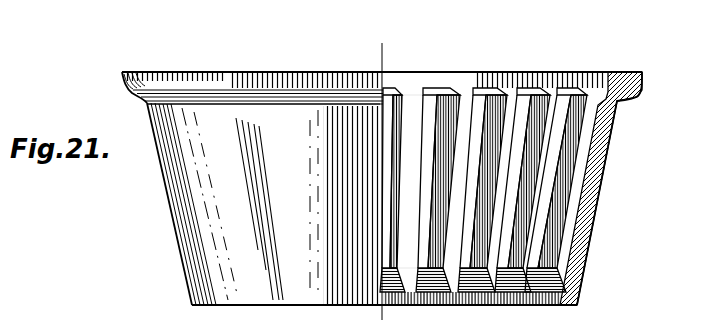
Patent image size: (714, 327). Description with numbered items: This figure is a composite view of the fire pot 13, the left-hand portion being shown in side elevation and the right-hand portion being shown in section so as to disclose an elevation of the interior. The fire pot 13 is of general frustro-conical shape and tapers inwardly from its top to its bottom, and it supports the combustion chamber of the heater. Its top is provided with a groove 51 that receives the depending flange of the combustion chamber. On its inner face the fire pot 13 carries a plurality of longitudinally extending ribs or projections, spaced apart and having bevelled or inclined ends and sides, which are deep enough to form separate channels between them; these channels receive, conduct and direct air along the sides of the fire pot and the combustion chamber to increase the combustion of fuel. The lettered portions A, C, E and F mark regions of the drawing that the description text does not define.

The fire pot 13 is at (610, 148).
The groove 51 is at (642, 78).
The side wall section A is at (159, 204).
The side wall section C is at (603, 203).
The rib E is at (434, 110).
The groove between ribs F is at (416, 108).